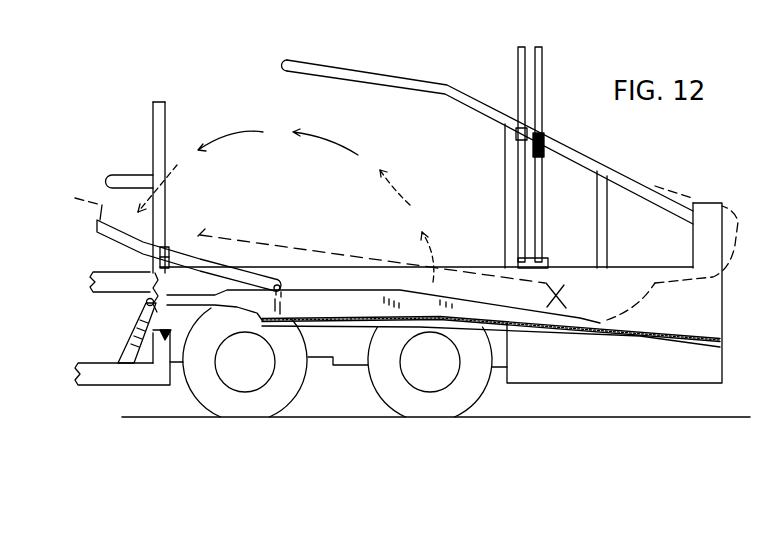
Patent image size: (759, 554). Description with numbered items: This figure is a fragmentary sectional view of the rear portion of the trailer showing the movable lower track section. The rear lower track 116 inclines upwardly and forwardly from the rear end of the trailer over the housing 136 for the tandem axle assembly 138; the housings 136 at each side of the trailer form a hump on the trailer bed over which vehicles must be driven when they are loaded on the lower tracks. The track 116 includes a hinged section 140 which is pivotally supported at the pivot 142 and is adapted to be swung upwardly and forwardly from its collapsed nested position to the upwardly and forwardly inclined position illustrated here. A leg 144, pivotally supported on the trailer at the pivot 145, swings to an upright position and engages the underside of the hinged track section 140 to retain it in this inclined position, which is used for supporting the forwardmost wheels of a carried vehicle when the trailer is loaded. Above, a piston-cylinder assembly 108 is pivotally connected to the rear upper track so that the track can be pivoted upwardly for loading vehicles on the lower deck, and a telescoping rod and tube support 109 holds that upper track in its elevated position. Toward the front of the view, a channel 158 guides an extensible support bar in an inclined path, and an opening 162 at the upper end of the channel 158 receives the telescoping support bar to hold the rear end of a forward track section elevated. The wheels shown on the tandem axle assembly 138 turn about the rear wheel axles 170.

The piston-cylinder assembly 108 is at (518, 168).
The telescoping rod and tube support 109 is at (543, 112).
The rear lower track 116 is at (600, 301).
The housing 136 is at (359, 304).
The tandem axle assembly 138 is at (379, 379).
The hinged section 140 is at (181, 243).
The pivot support 142 is at (281, 284).
The leg 144 is at (187, 268).
The pivot support 145 is at (185, 266).
The channel 158 is at (128, 332).
The opening 162 is at (146, 303).
The rear wheel axles 170 is at (243, 363).